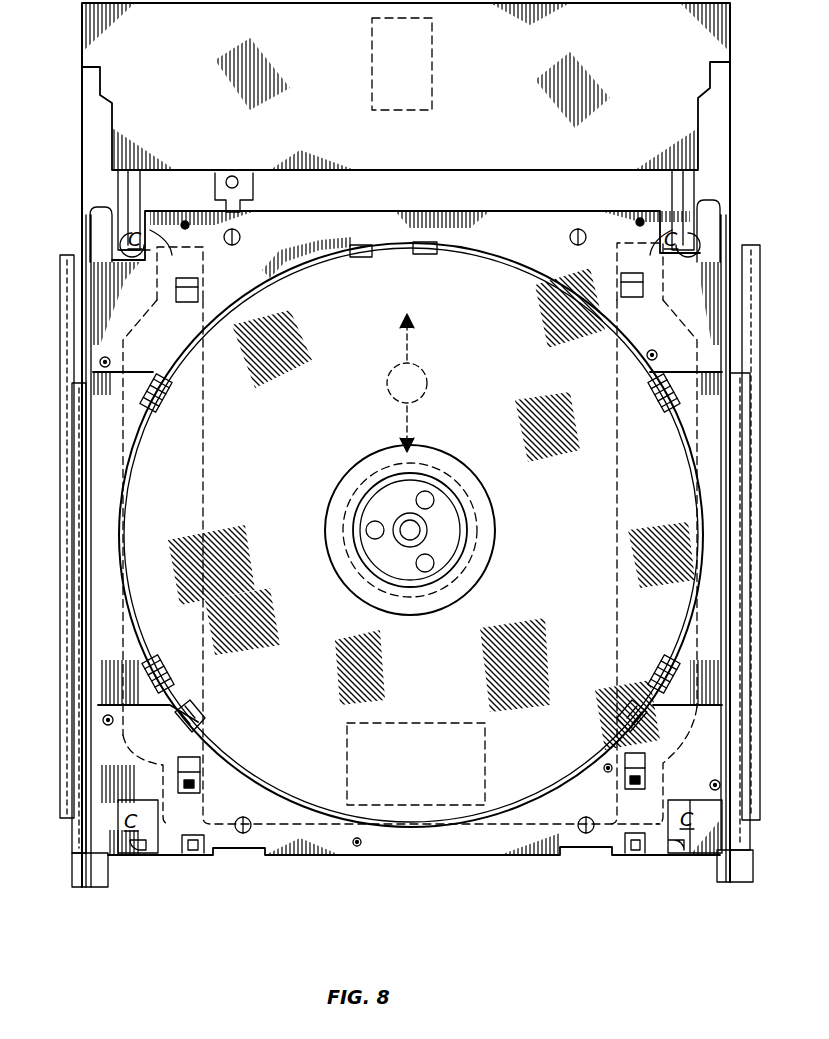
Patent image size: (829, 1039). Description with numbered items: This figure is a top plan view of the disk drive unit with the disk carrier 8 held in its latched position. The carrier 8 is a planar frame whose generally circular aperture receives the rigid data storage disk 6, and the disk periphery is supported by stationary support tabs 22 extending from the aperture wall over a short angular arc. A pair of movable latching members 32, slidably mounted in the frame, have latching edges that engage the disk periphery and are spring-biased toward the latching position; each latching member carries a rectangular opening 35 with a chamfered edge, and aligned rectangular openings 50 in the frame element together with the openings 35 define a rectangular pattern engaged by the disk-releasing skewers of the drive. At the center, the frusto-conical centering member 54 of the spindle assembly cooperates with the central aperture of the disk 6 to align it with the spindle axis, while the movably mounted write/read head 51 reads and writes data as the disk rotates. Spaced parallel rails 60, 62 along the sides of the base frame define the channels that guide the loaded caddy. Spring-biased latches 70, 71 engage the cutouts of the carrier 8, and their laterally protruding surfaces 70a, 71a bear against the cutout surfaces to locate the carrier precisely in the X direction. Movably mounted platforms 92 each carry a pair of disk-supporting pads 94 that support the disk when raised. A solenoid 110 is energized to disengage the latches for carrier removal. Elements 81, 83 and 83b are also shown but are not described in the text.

The rigid data storage disk 6 is at (512, 270).
The carrier 8 is at (484, 850).
The stationary support tabs 22 is at (366, 258).
The movable latching members 32 is at (622, 705).
The rectangular opening 35 is at (622, 780).
The rectangular openings 50 is at (632, 312).
The write/read head 51 is at (419, 390).
The frusto-conical centering member 54 is at (450, 540).
The rail 60 is at (87, 887).
The rail 62 is at (748, 882).
The spring-biased latch 70 is at (132, 183).
The spring-biased latch 71 is at (680, 183).
The laterally protruding surface 70a is at (180, 273).
The laterally protruding surface 71a is at (636, 271).
The motor region 81 is at (414, 726).
The side rails 83 is at (58, 438).
The lower left rail 83b is at (62, 826).
The movably mounted platforms 92 is at (690, 752).
The disk-supporting pads 94 is at (657, 662).
The solenoid 110 is at (420, 62).